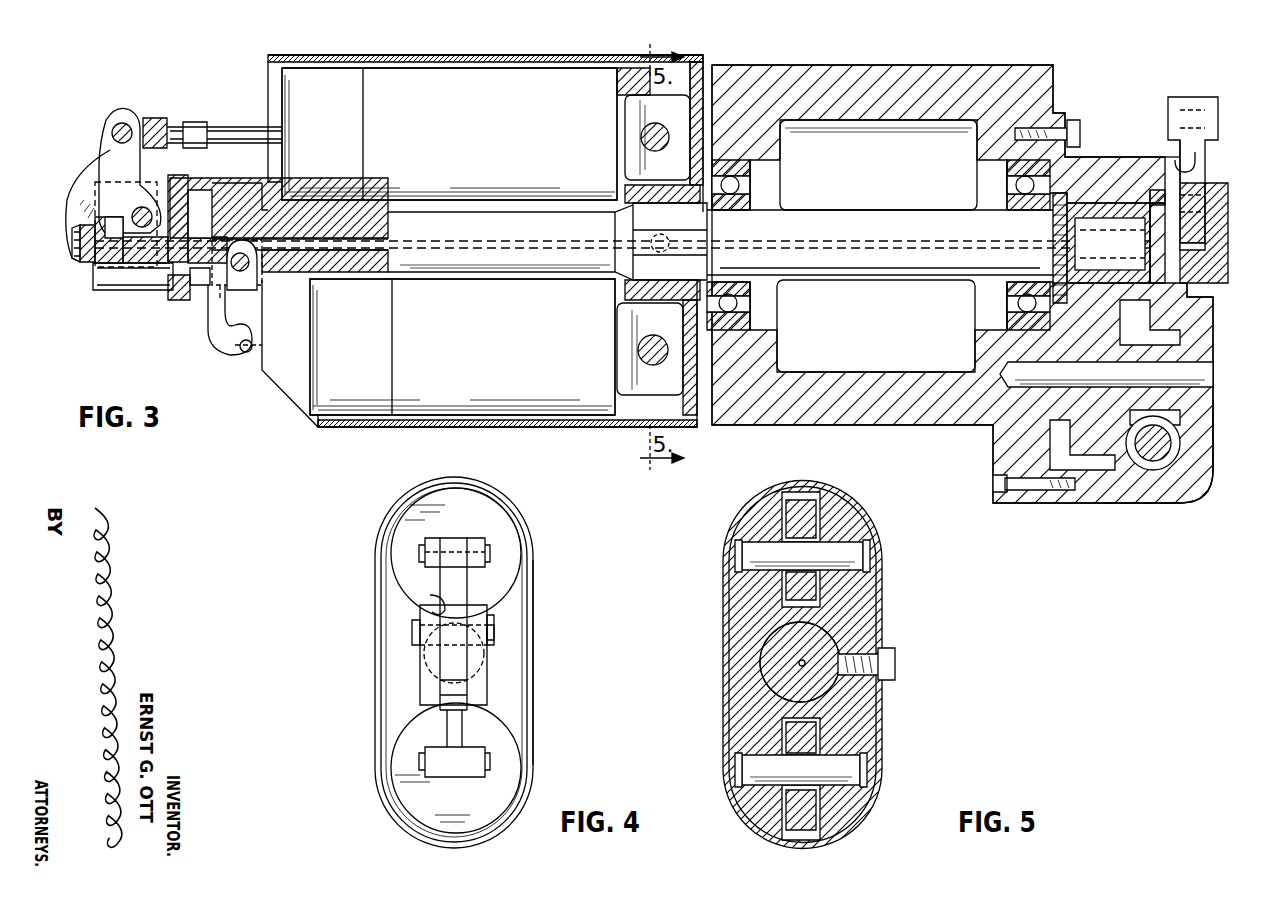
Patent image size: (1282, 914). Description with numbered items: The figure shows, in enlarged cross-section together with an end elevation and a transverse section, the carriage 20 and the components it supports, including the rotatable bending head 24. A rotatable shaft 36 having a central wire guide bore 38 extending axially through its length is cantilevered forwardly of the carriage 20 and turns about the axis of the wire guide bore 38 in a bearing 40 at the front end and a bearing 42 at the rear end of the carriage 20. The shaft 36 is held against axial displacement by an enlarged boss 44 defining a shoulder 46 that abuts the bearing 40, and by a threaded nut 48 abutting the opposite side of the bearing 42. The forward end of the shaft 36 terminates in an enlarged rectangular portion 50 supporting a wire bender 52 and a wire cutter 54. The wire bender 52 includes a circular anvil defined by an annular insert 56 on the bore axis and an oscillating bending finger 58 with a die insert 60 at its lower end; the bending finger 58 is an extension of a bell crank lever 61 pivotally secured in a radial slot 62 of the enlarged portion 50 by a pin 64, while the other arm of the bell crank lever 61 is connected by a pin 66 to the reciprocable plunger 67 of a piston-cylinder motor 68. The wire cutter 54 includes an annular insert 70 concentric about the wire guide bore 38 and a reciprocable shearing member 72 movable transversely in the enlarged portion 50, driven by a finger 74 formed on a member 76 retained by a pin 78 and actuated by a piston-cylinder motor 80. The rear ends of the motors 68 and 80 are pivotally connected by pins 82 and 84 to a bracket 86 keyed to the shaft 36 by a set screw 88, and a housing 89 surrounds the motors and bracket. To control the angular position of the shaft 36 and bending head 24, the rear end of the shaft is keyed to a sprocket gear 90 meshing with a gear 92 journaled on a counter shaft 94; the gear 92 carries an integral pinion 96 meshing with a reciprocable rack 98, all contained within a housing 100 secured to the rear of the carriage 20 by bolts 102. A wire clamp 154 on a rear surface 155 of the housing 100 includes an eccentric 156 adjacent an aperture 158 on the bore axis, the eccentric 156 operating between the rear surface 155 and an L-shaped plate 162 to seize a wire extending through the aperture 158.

In FIG. 3, the carriage 20 is at (902, 437).
In FIG. 3, the rotatable bending head 24 is at (402, 437).
In FIG. 4, the rotatable bending head 24 is at (374, 808).
In FIG. 3, the rotatable shaft 36 is at (622, 242).
In FIG. 3, the wire guide bore 38 is at (370, 240).
In FIG. 5, the wire guide bore 38 is at (795, 666).
In FIG. 3, the bearing 40 is at (752, 212).
In FIG. 3, the bearing 42 is at (990, 185).
In FIG. 3, the enlarged boss 44 is at (661, 241).
In FIG. 5, the enlarged boss 44 is at (760, 660).
In FIG. 3, the shoulder 46 is at (715, 208).
In FIG. 3, the threaded nut 48 is at (1050, 216).
In FIG. 3, the enlarged rectangular portion 50 is at (262, 190).
In FIG. 4, the enlarged rectangular portion 50 is at (487, 690).
In FIG. 3, the wire bender 52 is at (81, 156).
In FIG. 3, the wire cutter 54 is at (168, 318).
In FIG. 3, the annular insert 56 is at (118, 290).
In FIG. 3, the oscillating bending finger 58 is at (70, 250).
In FIG. 3, the die insert 60 is at (98, 265).
In FIG. 3, the bell crank lever 61 is at (98, 160).
In FIG. 4, the bell crank lever 61 is at (468, 595).
In FIG. 3, the radial slot 62 is at (143, 190).
In FIG. 3, the pin 64 is at (126, 223).
In FIG. 4, the pin 64 is at (494, 630).
In FIG. 3, the pin 66 is at (123, 122).
In FIG. 4, the pin 66 is at (454, 545).
In FIG. 3, the reciprocable plunger 67 is at (226, 125).
In FIG. 3, the piston-cylinder motor 68 is at (449, 134).
In FIG. 4, the piston-cylinder motor 68 is at (508, 547).
In FIG. 3, the annular insert 70 is at (160, 263).
In FIG. 3, the reciprocable shearing member 72 is at (225, 285).
In FIG. 3, the finger 74 is at (196, 300).
In FIG. 3, the member 76 is at (222, 330).
In FIG. 3, the pin 78 is at (250, 270).
In FIG. 3, the piston-cylinder motor 80 is at (462, 347).
In FIG. 4, the piston-cylinder motor 80 is at (498, 766).
In FIG. 3, the pin 82 is at (640, 135).
In FIG. 5, the pin 82 is at (845, 548).
In FIG. 3, the pin 84 is at (638, 350).
In FIG. 5, the pin 84 is at (850, 790).
In FIG. 5, the bracket 86 is at (868, 612).
In FIG. 5, the set screw 88 is at (890, 662).
In FIG. 3, the housing 89 is at (533, 427).
In FIG. 4, the housing 89 is at (533, 720).
In FIG. 5, the housing 89 is at (875, 718).
In FIG. 3, the sprocket gear 90 is at (1090, 205).
In FIG. 3, the gear 92 is at (1115, 325).
In FIG. 3, the counter shaft 94 is at (1200, 372).
In FIG. 3, the pinion 96 is at (1180, 415).
In FIG. 3, the reciprocable rack 98 is at (1170, 455).
In FIG. 3, the housing 100 is at (1140, 500).
In FIG. 3, the bolts 102 is at (1075, 122).
In FIG. 3, the wire clamp 154 is at (1218, 152).
In FIG. 3, the rear surface 155 is at (1178, 160).
In FIG. 3, the eccentric 156 is at (1190, 225).
In FIG. 3, the aperture 158 is at (1165, 230).
In FIG. 3, the plate 162 is at (1222, 233).
In FIG. 4, the plate 162 is at (436, 602).